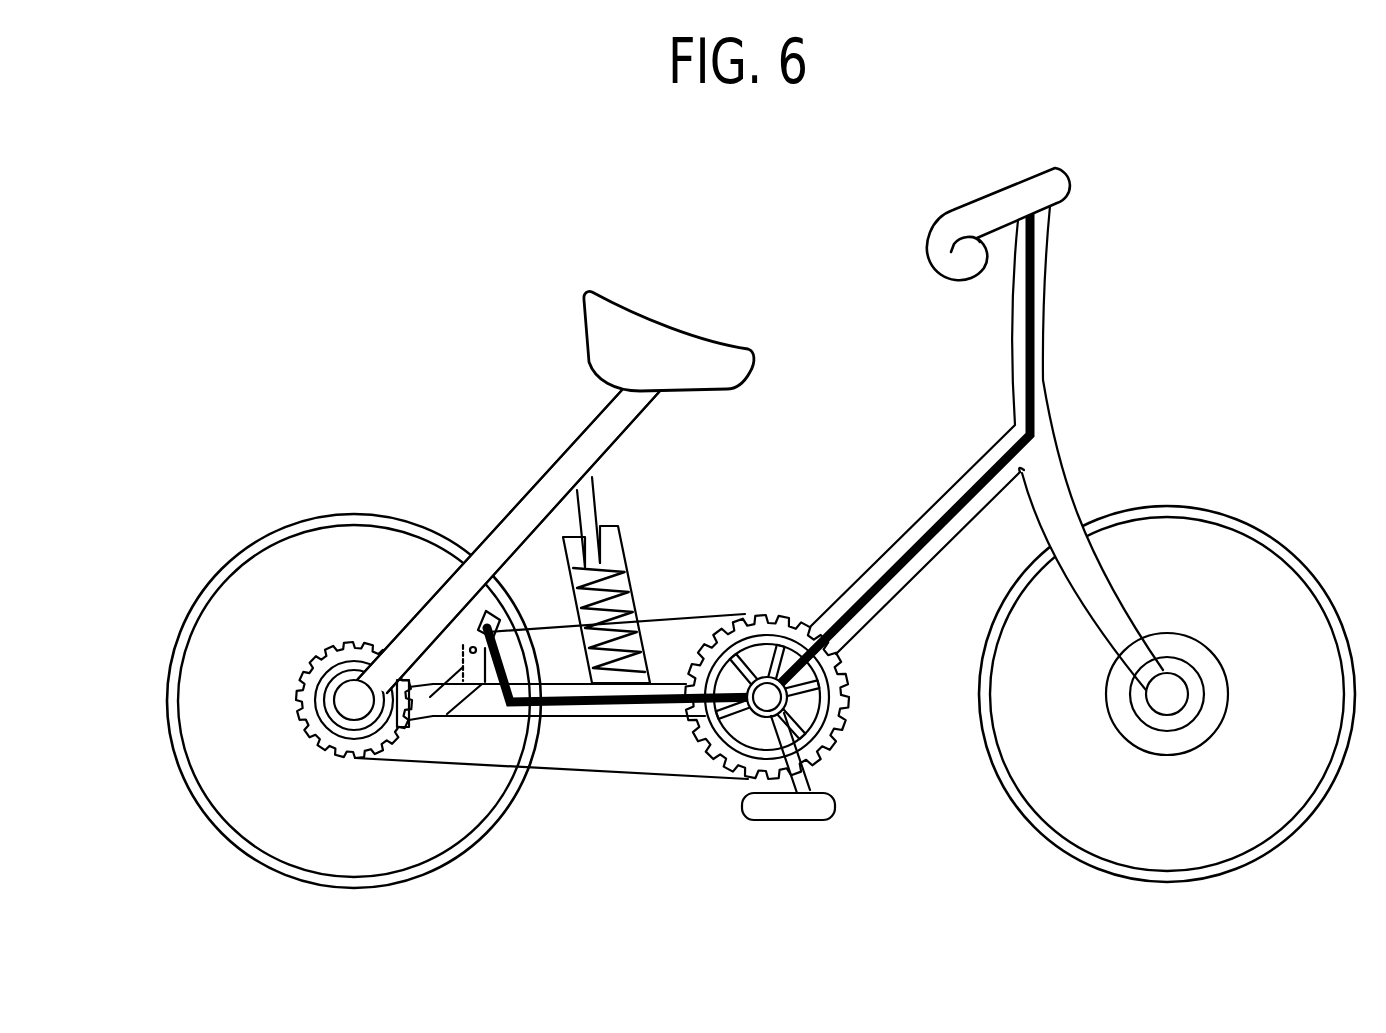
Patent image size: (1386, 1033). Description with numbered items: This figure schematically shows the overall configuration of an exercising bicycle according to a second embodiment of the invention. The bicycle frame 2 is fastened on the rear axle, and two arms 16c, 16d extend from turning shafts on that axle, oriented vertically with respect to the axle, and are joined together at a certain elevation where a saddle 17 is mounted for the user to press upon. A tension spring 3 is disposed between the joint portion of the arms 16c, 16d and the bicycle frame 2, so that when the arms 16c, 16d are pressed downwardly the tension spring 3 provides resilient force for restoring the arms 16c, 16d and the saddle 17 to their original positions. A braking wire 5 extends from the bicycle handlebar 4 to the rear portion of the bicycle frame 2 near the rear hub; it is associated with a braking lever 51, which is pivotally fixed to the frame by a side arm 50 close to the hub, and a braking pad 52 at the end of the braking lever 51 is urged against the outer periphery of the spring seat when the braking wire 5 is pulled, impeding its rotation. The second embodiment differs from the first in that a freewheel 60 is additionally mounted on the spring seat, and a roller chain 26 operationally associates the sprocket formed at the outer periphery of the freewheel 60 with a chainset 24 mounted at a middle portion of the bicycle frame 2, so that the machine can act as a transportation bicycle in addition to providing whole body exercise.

The bicycle frame 2 is at (768, 613).
The tension spring 3 is at (634, 602).
The bicycle handlebar 4 is at (983, 212).
The braking wire 5 is at (1033, 378).
The arm 16c is at (548, 485).
The arm 16d is at (508, 531).
The saddle 17 is at (667, 343).
The chainset 24 is at (838, 733).
The roller chain 26 is at (672, 782).
The side arm 50 is at (486, 614).
The braking lever 51 is at (440, 692).
The braking pad 52 is at (410, 713).
The freewheel 60 is at (318, 662).